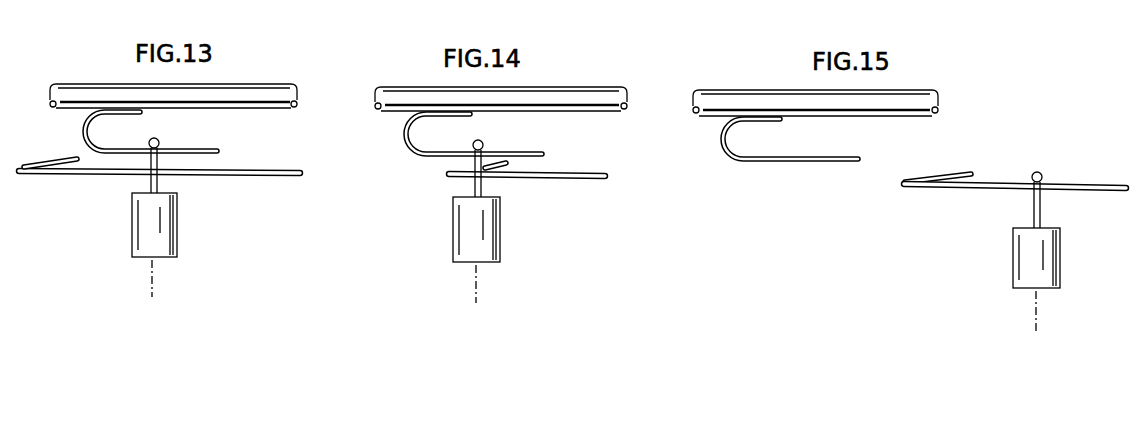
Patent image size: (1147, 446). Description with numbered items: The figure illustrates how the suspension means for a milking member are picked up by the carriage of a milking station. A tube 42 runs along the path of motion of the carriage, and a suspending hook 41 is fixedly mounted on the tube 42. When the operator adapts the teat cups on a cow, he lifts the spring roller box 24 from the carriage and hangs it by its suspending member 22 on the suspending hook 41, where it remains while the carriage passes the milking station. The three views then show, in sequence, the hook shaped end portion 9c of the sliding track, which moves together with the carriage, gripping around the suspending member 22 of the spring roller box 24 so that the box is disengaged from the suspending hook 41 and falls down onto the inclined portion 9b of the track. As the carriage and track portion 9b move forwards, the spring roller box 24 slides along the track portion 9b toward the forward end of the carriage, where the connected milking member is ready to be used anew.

The tube 42 is at (107, 92).
The suspending hook 41 is at (192, 149).
The inclined portion of the track 9b is at (278, 173).
The hook shaped end portion of the sliding track 9c is at (62, 158).
The suspending member 22 is at (148, 182).
The spring roller box 24 is at (150, 227).